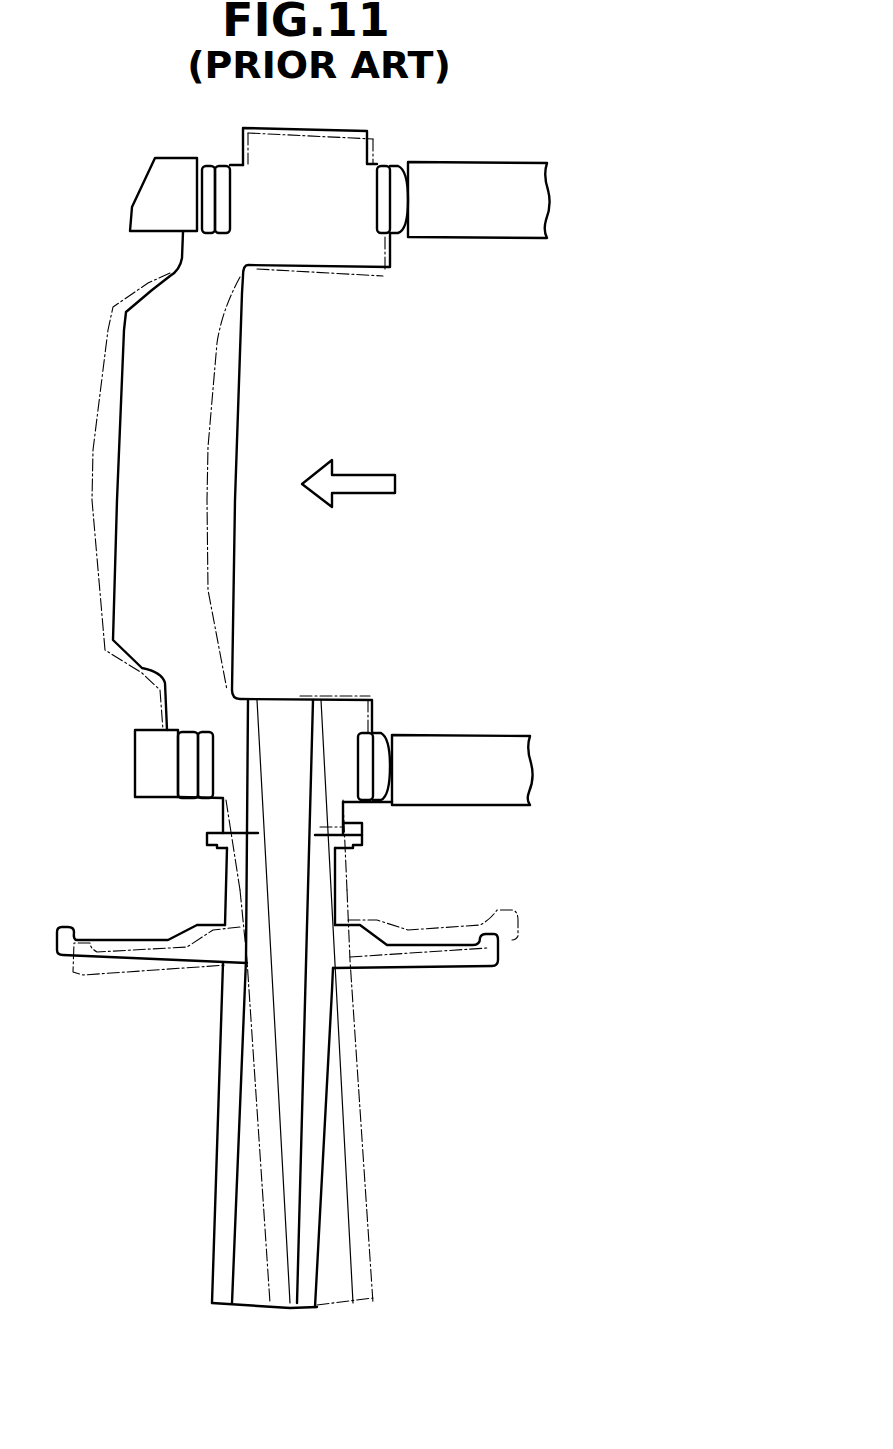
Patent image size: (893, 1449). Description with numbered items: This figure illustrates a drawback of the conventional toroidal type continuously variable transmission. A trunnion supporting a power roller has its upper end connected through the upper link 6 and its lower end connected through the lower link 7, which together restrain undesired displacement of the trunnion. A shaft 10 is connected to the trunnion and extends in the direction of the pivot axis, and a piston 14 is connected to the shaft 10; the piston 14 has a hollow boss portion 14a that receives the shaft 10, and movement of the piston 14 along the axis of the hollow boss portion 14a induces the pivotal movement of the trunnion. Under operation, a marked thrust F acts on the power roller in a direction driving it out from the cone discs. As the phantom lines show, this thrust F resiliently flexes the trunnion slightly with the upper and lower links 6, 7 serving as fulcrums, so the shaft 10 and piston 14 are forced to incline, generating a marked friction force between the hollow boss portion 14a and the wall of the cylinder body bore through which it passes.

The upper link 6 is at (147, 202).
The thrust F is at (380, 473).
The lower link 7 is at (137, 765).
The shaft 10 is at (243, 1047).
The piston 14 is at (142, 938).
The hollow boss portion 14a is at (223, 1103).